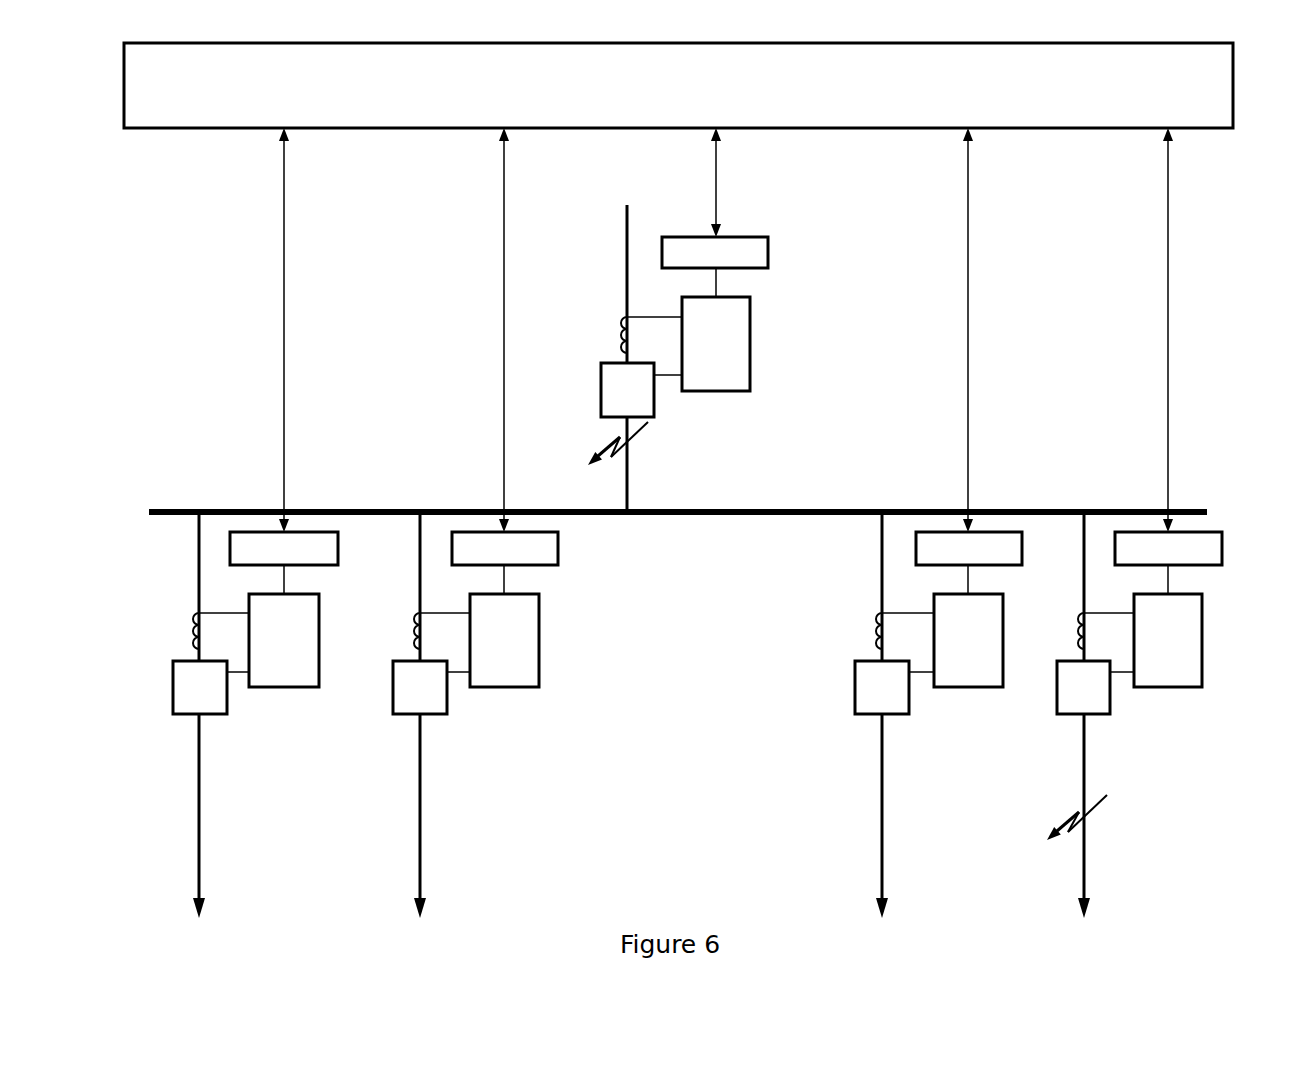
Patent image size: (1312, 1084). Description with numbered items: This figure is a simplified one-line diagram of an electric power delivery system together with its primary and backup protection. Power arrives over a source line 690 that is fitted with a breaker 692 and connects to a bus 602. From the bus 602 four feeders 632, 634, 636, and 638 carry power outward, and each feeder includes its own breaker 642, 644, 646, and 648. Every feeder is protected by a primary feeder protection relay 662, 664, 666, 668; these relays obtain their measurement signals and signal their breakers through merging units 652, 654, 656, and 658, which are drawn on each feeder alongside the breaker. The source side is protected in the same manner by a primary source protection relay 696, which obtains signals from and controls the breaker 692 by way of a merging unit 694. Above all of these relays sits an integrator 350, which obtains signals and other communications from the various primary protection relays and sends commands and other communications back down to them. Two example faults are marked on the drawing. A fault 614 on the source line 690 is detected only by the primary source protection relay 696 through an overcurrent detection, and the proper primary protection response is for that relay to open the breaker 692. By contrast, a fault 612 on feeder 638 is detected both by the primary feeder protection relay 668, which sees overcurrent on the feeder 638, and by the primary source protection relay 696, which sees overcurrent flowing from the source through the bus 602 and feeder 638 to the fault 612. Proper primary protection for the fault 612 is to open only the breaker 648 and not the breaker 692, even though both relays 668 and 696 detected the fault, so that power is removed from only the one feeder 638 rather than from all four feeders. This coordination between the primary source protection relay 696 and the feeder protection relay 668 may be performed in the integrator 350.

The integrator 350 is at (1235, 74).
The bus 602 is at (779, 510).
The source line 690 is at (626, 253).
The breaker 692 is at (600, 398).
The merging unit 694 is at (712, 392).
The primary source protection relay 696 is at (769, 255).
The fault 614 is at (632, 440).
The feeder 632 is at (198, 843).
The feeder 634 is at (419, 843).
The feeder 636 is at (881, 844).
The feeder 638 is at (1083, 848).
The breaker 642 is at (173, 700).
The breaker 644 is at (393, 700).
The breaker 646 is at (855, 700).
The breaker 648 is at (1057, 703).
The merging unit 652 is at (290, 688).
The merging unit 654 is at (510, 688).
The merging unit 656 is at (975, 688).
The merging unit 658 is at (1175, 688).
The primary feeder protection relay 662 is at (339, 548).
The primary feeder protection relay 664 is at (559, 548).
The primary feeder protection relay 666 is at (1023, 548).
The primary feeder protection relay 668 is at (1223, 548).
The fault 612 is at (1090, 813).